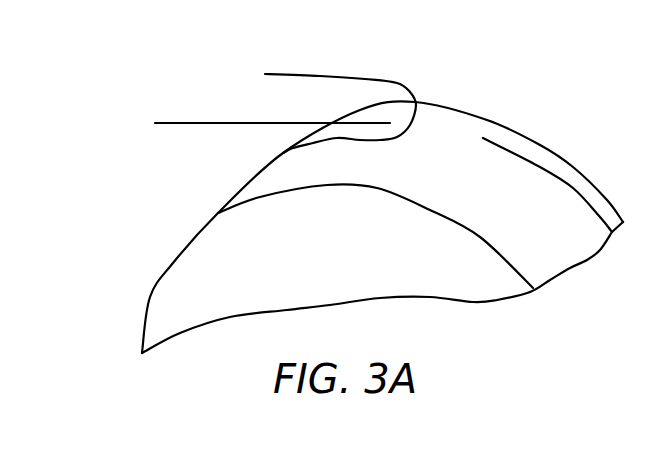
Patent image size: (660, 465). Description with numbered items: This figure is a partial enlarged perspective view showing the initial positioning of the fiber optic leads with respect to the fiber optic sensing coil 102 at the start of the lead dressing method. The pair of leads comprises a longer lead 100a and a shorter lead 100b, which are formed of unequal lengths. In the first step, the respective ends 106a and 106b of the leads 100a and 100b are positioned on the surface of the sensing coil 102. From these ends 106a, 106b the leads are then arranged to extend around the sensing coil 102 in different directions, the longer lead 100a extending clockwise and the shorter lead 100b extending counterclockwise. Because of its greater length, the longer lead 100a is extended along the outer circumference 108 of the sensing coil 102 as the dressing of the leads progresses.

The longer lead 100a is at (426, 96).
The shorter lead 100b is at (198, 118).
The sensing coil 102 is at (395, 269).
The end of longer lead 106a is at (477, 137).
The end of shorter lead 106b is at (400, 120).
The outer circumference 108 is at (558, 253).